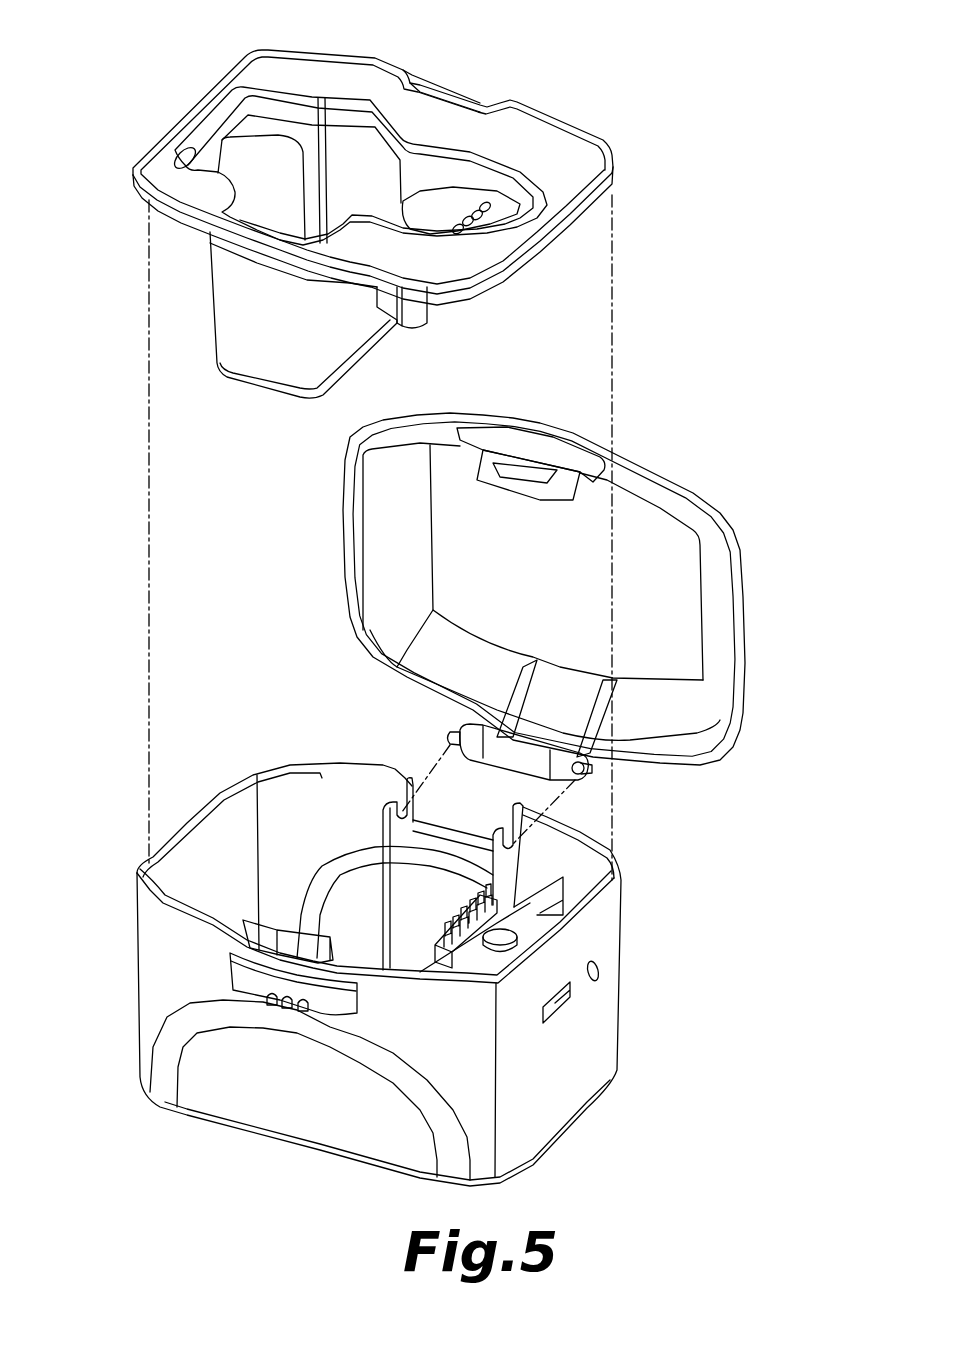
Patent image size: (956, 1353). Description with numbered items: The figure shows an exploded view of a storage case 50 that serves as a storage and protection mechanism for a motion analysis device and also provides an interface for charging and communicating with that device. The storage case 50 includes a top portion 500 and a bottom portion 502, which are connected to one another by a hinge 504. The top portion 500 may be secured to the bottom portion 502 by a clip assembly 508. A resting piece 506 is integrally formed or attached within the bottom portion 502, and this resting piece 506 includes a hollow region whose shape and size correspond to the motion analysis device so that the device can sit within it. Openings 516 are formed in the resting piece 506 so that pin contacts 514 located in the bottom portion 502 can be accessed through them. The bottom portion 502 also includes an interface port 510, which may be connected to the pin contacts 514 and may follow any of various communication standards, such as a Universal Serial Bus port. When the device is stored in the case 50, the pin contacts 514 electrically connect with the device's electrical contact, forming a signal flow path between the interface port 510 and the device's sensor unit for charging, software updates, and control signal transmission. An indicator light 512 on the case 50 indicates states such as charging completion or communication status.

The storage case 50 is at (175, 36).
The top portion 500 is at (717, 520).
The bottom portion 502 is at (570, 1100).
The hinge 504 is at (592, 775).
The resting piece 506 is at (613, 147).
The clip assembly 508 is at (244, 921).
The interface port 510 is at (560, 1010).
The indicator light 512 is at (600, 977).
The pin contacts 514 is at (490, 907).
The openings 516 is at (490, 226).